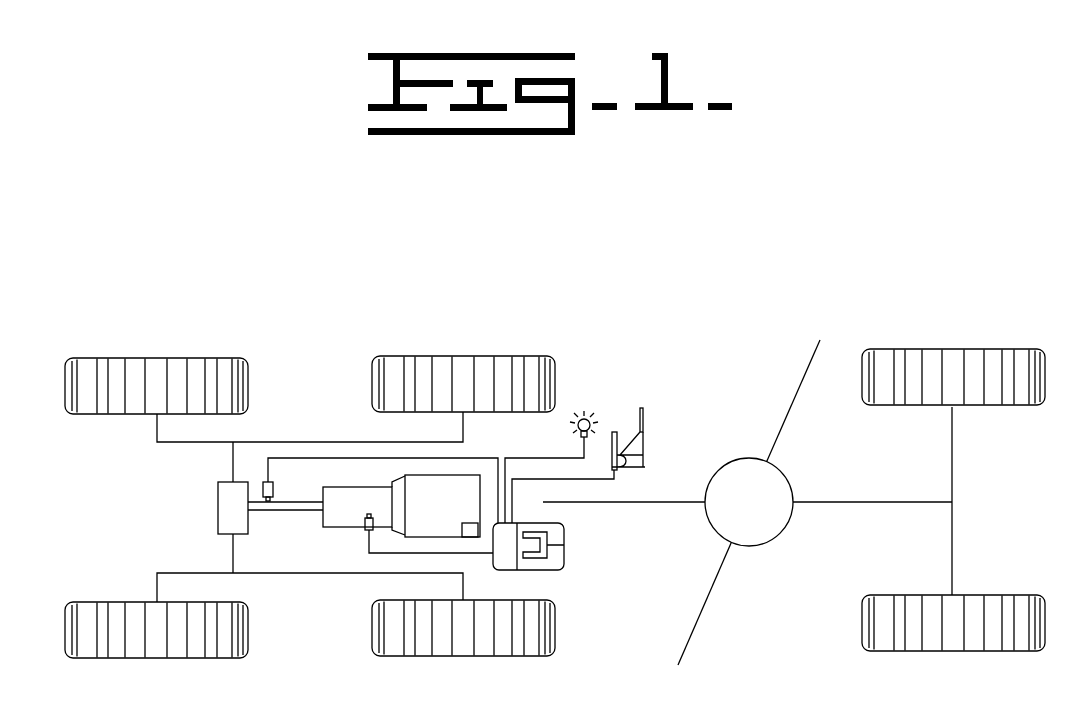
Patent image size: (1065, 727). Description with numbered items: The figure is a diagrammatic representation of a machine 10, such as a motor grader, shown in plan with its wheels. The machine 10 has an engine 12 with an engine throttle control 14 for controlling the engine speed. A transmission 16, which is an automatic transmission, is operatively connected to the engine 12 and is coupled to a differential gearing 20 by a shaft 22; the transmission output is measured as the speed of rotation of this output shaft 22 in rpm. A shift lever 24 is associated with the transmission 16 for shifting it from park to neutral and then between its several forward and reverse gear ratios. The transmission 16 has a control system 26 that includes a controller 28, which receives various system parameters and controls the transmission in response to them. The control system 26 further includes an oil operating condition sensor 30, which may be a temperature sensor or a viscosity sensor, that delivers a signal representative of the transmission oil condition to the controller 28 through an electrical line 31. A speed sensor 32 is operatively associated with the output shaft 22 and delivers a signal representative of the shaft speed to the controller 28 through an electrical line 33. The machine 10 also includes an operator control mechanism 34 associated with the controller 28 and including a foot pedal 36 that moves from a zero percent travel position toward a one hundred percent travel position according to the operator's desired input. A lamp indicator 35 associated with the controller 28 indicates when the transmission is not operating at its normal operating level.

The machine 10 is at (293, 288).
The engine 12 is at (473, 474).
The engine throttle control 14 is at (472, 538).
The transmission 16 is at (351, 486).
The differential gearing 20 is at (218, 515).
The shaft 22 is at (283, 512).
The shift lever 24 is at (564, 540).
The control system 26 is at (545, 496).
The controller 28 is at (507, 571).
The oil operating condition sensor 30 is at (363, 526).
The electrical line 31 is at (387, 556).
The speed sensor 32 is at (263, 485).
The electrical line 33 is at (317, 460).
The operator control mechanism 34 is at (680, 371).
The lamp indicator 35 is at (596, 410).
The foot pedal 36 is at (644, 461).